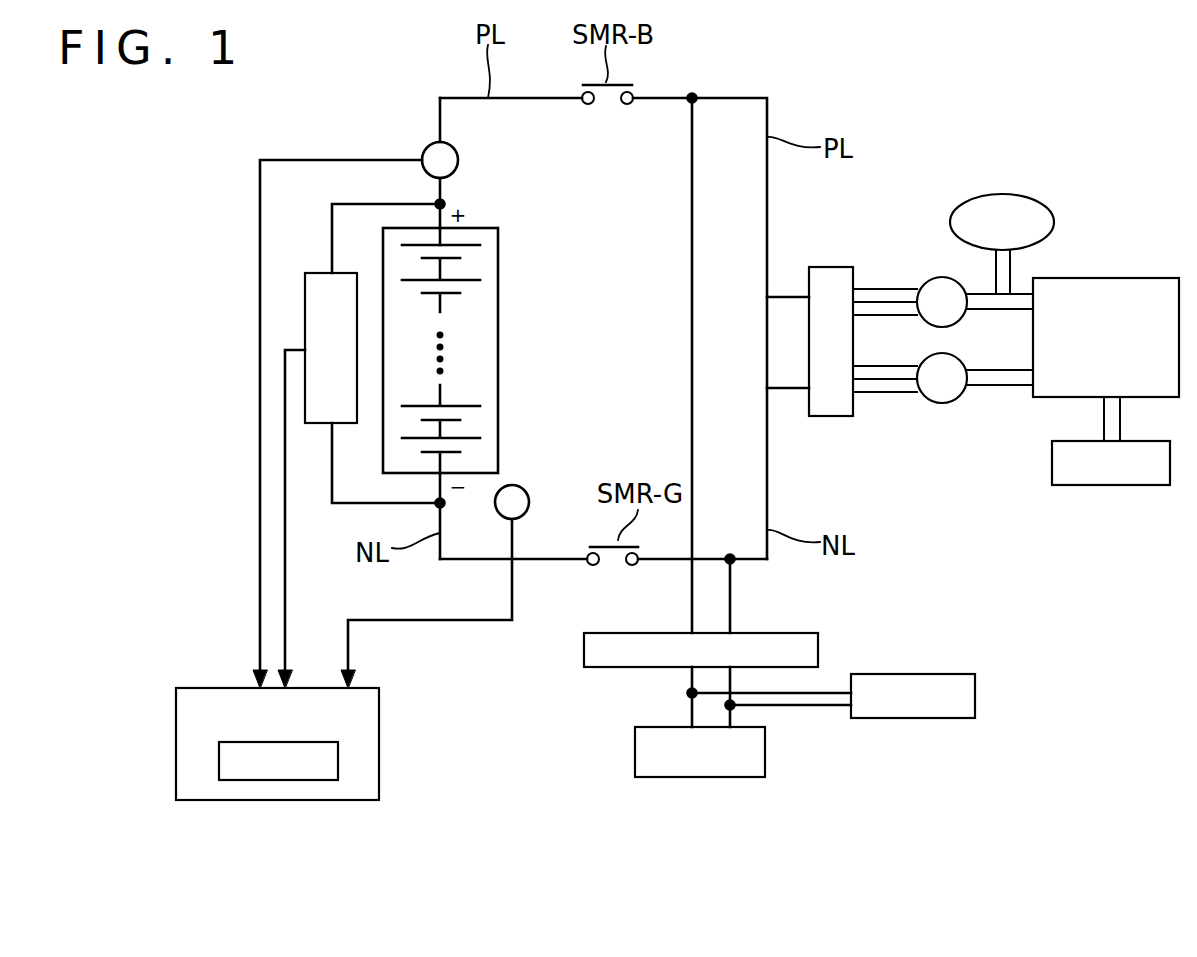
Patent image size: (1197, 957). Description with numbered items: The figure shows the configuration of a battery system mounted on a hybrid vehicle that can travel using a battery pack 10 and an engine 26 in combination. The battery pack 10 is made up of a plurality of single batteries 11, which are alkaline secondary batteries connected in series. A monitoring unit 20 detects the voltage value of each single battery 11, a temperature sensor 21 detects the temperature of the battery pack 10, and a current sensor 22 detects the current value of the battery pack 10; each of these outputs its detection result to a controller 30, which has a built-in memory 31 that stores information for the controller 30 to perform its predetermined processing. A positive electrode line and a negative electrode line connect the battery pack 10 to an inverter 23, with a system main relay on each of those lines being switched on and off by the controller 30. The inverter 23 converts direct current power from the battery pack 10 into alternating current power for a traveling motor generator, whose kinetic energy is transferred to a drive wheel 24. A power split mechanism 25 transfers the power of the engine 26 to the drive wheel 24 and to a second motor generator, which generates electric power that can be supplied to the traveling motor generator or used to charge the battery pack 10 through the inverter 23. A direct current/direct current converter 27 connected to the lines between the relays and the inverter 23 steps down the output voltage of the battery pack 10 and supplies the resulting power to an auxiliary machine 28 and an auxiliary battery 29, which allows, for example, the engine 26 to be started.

The battery pack 10 is at (477, 350).
The single battery 11 is at (478, 251).
The monitoring unit 20 is at (312, 272).
The temperature sensor 21 is at (529, 503).
The current sensor 22 is at (425, 147).
The inverter 23 is at (832, 418).
The drive wheel 24 is at (1006, 194).
The power split mechanism 25 is at (1116, 277).
The engine 26 is at (1110, 487).
The direct current/direct current converter 27 is at (818, 648).
The auxiliary machine 28 is at (765, 740).
The auxiliary battery 29 is at (975, 695).
The controller 30 is at (282, 744).
The memory 31 is at (219, 760).